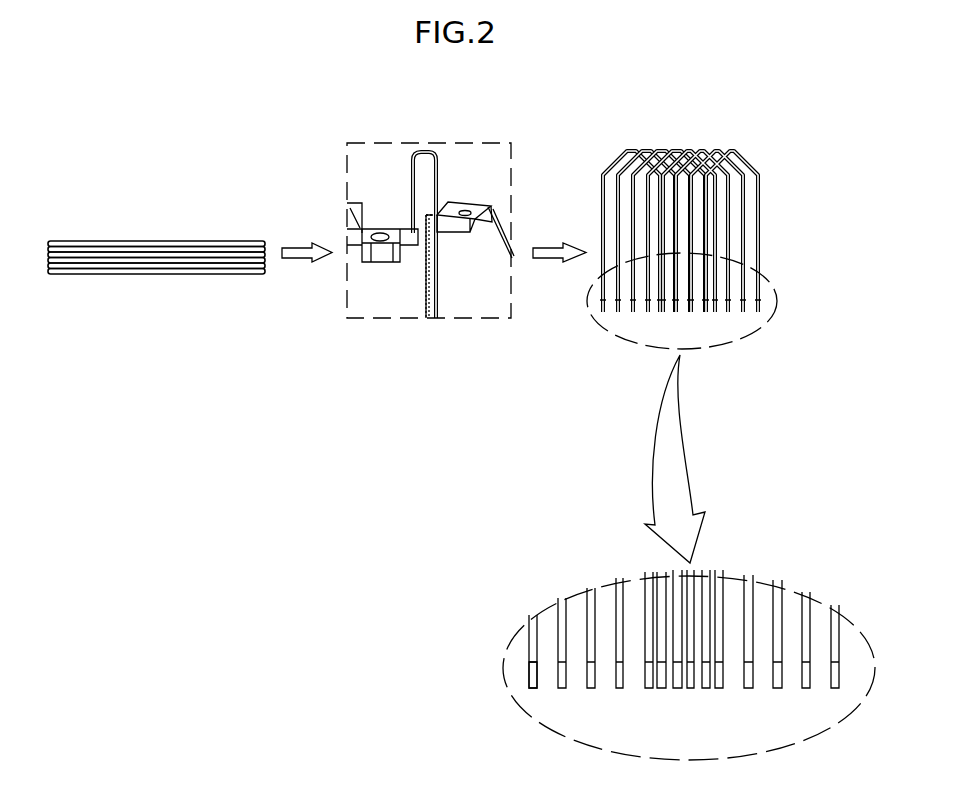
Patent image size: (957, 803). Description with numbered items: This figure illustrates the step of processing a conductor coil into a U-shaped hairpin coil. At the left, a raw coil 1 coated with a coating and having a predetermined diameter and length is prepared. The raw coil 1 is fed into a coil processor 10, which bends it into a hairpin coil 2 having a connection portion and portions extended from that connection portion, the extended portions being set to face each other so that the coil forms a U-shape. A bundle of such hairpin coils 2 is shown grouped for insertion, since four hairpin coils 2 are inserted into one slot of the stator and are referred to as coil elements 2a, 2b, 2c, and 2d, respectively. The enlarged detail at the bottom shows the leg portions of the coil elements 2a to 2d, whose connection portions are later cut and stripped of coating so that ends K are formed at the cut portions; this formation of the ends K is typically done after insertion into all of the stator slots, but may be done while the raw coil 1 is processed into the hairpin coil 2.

The raw coil 1 is at (170, 275).
The coil processor 10 is at (462, 298).
The hairpin coil 2 is at (665, 428).
The coil element 2a is at (604, 292).
The coil element 2b is at (616, 285).
The coil element 2c is at (633, 290).
The coil element 2d is at (648, 280).
The end K is at (533, 680).